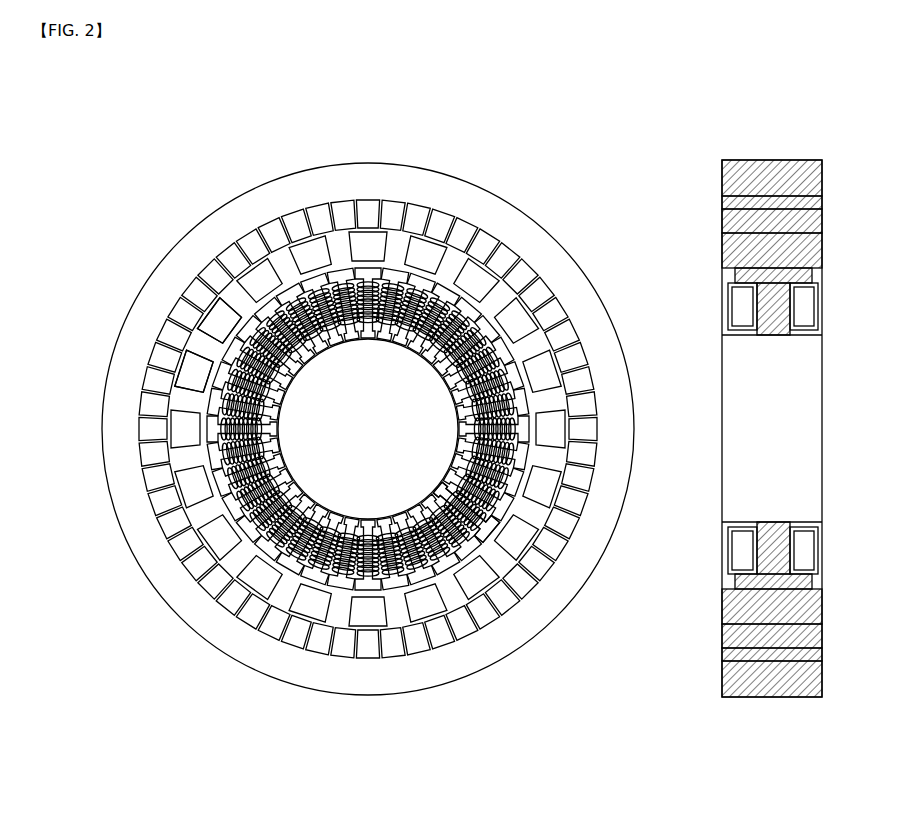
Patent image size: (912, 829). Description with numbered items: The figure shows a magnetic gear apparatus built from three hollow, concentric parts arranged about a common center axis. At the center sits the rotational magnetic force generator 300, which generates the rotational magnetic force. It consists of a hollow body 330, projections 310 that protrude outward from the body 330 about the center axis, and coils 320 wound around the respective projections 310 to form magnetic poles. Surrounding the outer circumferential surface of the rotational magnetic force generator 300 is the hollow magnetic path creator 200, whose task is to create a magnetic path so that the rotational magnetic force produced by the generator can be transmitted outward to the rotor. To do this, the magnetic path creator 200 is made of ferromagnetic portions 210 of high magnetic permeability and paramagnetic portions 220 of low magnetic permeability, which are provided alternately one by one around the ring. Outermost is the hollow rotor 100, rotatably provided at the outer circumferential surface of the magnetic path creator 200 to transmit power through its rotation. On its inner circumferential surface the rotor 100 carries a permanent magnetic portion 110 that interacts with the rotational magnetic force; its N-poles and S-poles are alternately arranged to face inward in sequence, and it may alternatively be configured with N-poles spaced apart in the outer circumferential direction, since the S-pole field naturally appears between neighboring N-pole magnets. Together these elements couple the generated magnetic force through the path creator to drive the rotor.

The rotor 100 is at (348, 162).
The permanent magnetic portion 110 is at (418, 208).
The magnetic path creator 200 is at (178, 424).
The ferromagnetic portions 210 is at (183, 460).
The paramagnetic portions 220 is at (192, 498).
The rotational magnetic force generator 300 is at (240, 574).
The projections 310 is at (339, 628).
The coils 320 is at (488, 548).
The body 330 is at (480, 522).